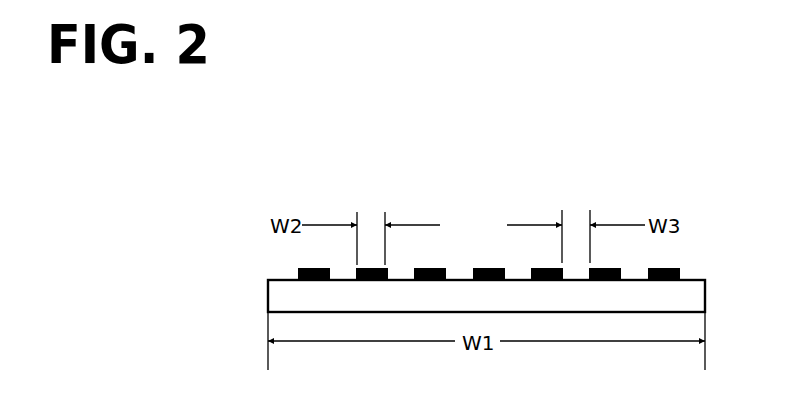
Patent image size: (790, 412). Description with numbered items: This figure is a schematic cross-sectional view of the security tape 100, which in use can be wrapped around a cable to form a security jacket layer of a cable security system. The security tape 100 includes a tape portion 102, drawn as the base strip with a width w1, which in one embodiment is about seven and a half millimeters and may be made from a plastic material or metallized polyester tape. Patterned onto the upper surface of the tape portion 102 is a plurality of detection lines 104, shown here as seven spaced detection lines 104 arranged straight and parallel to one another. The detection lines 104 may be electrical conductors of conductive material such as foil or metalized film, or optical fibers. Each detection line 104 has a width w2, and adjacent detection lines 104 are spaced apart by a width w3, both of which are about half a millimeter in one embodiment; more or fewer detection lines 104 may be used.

The security tape 100 is at (212, 189).
The tape portion 102 is at (283, 298).
The detection lines 104 is at (297, 273).